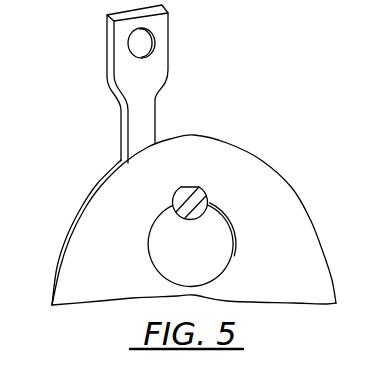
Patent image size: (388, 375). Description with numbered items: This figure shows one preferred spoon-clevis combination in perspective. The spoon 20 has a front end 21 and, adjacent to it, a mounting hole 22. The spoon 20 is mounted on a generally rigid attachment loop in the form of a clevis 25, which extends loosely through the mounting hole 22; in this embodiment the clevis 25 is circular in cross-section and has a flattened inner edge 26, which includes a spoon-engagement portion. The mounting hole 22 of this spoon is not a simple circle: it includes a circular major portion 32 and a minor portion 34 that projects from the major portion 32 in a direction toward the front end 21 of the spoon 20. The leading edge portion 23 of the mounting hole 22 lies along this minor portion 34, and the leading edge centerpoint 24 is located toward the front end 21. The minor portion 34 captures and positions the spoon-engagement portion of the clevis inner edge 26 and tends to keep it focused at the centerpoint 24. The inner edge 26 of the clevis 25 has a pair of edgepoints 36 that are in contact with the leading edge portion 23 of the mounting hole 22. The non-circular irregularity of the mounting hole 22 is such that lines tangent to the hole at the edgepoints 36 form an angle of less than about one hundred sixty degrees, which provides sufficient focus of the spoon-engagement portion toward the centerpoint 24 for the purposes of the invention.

The spoon 20 is at (174, 206).
The front end 21 is at (197, 133).
The mounting hole 22 is at (193, 246).
The leading edge portion 23 is at (193, 184).
The leading edge centerpoint 24 is at (194, 187).
The clevis 25 is at (155, 97).
The inner edge 26 is at (184, 187).
The circular major portion 32 is at (222, 251).
The minor portion 34 is at (177, 208).
The edgepoints 36 is at (205, 190).